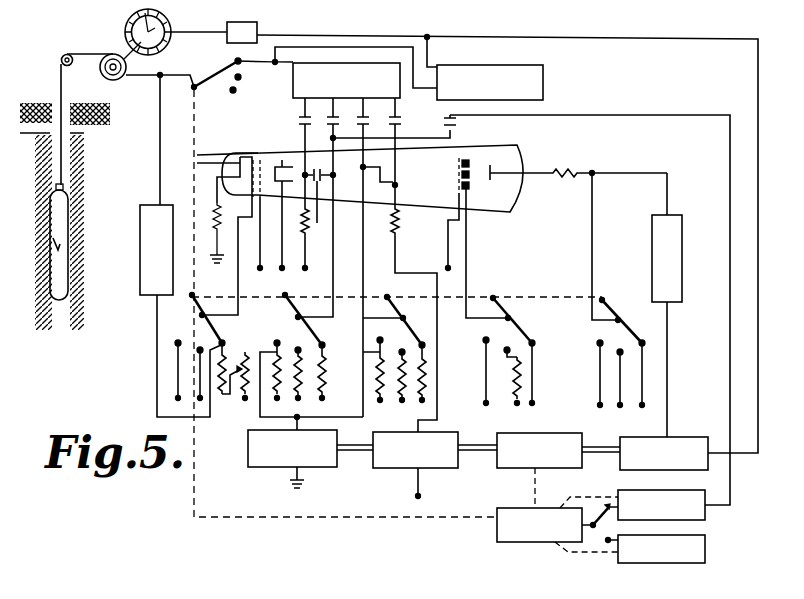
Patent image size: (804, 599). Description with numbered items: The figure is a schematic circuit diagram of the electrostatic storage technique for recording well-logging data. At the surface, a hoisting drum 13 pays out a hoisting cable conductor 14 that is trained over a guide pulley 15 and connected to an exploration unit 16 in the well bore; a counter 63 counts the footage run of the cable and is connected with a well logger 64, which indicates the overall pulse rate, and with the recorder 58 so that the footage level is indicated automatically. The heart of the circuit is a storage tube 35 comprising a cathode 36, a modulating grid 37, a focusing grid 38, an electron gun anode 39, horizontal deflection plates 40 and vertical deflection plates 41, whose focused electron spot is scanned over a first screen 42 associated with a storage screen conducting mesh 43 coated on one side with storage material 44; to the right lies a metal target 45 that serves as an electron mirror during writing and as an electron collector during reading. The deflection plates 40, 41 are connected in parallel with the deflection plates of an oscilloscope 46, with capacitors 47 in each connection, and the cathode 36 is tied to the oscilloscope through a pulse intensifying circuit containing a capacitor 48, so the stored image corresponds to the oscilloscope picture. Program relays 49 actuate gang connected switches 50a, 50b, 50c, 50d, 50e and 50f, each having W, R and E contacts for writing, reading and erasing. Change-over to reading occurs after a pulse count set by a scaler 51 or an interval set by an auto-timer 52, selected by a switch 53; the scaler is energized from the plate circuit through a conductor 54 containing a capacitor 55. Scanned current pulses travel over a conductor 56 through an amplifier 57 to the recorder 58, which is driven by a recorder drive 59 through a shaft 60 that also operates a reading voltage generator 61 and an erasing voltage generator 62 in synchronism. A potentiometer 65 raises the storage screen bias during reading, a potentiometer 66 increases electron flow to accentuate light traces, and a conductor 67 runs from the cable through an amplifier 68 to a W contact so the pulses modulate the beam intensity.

The hoisting drum 13 is at (116, 54).
The hoisting cable conductor 14 is at (60, 90).
The guide pulley 15 is at (66, 54).
The exploration unit 16 is at (50, 238).
The storage tube 35 is at (417, 203).
The cathode 36 is at (196, 162).
The modulating grid 37 is at (240, 157).
The focusing grid 38 is at (258, 158).
The electron gun anode 39 is at (283, 160).
The horizontal deflection plates 40 is at (316, 245).
The vertical deflection plates 41 is at (370, 177).
The first screen 42 is at (456, 176).
The storage screen conducting mesh 43 is at (467, 160).
The storage material coating 44 is at (470, 160).
The metal target 45 is at (490, 178).
The oscilloscope 46 is at (354, 68).
The capacitors 47 is at (333, 138).
The capacitor 48 is at (316, 133).
The program relays 49 is at (497, 530).
The switch 50a is at (225, 82).
The switch 50b is at (180, 323).
The switch 50c is at (288, 317).
The switch 50d is at (407, 312).
The switch 50e is at (547, 277).
The switch 50f is at (623, 307).
The scaler 51 is at (706, 513).
The auto-timer 52 is at (706, 552).
The switch 53 is at (600, 532).
The conductor 54 is at (670, 116).
The capacitor 55 is at (443, 121).
The conductor 56 is at (648, 173).
The amplifier 57 is at (678, 268).
The recorder 58 is at (672, 437).
The recorder drive 59 is at (497, 467).
The shaft 60 is at (603, 456).
The reading voltage generator 61 is at (376, 458).
The erasing voltage generator 62 is at (250, 453).
The counter 63 is at (258, 30).
The well logger 64 is at (543, 80).
The potentiometer 65 is at (510, 377).
The potentiometer 66 is at (262, 339).
The conductor 67 is at (157, 180).
The amplifier 68 is at (140, 233).